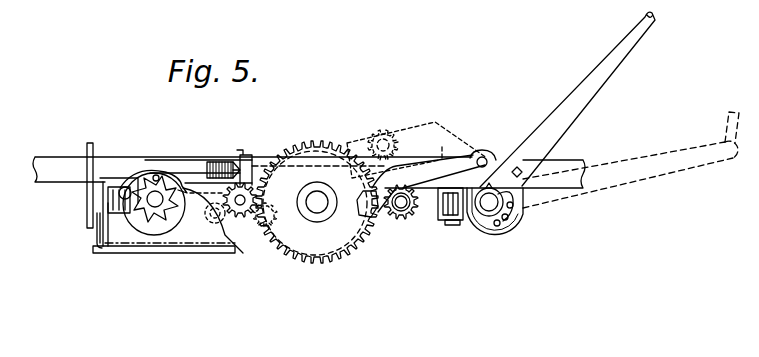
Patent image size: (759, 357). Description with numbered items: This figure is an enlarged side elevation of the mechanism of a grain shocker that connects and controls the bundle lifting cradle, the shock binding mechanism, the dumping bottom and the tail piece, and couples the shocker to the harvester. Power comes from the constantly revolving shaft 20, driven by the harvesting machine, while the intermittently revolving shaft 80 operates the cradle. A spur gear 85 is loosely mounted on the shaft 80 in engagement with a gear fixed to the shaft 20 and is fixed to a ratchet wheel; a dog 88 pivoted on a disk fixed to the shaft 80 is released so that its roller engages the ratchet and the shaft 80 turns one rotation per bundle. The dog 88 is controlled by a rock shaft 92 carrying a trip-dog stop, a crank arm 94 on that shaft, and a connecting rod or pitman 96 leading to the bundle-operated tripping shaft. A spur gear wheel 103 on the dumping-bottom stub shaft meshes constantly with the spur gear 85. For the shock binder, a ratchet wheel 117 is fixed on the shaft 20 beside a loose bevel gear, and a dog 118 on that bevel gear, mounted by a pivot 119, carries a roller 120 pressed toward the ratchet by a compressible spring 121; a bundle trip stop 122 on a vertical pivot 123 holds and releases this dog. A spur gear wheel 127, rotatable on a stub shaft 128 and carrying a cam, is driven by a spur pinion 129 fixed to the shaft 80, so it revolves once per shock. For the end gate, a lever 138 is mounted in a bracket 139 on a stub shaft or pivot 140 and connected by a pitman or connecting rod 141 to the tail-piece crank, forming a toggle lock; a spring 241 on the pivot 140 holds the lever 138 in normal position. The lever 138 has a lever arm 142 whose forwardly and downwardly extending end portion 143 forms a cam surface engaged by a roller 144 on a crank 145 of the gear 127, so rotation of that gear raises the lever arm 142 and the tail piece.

The constantly revolving shaft 20 is at (158, 206).
The intermittently revolving shaft 80 is at (261, 183).
The spur gear 85 is at (267, 145).
The dog 88 is at (245, 232).
The rock shaft 92 is at (102, 255).
The crank arm 94 is at (97, 232).
The connecting rod or pitman 96 is at (87, 195).
The spur gear wheel 103 is at (390, 210).
The ratchet wheel 117 is at (152, 216).
The dog 118 is at (142, 175).
The pivot 119 is at (157, 175).
The roller 120 is at (125, 187).
The compressible spring 121 is at (178, 167).
The bundle trip stop 122 is at (137, 179).
The vertical pivot 123 is at (243, 152).
The spur gear wheel 127 is at (326, 258).
The stub shaft 128 is at (317, 210).
The spur pinion 129 is at (247, 223).
The lever 138 is at (567, 132).
The bracket 139 is at (522, 220).
The stub shaft or pivot 140 is at (496, 212).
The pitman or connecting rod 141 is at (640, 20).
The lever arm 142 is at (412, 177).
The forwardly and downwardly extending end portion 143 is at (383, 205).
The roller 144 is at (402, 197).
The crank 145 is at (392, 212).
The spring 241 is at (490, 208).